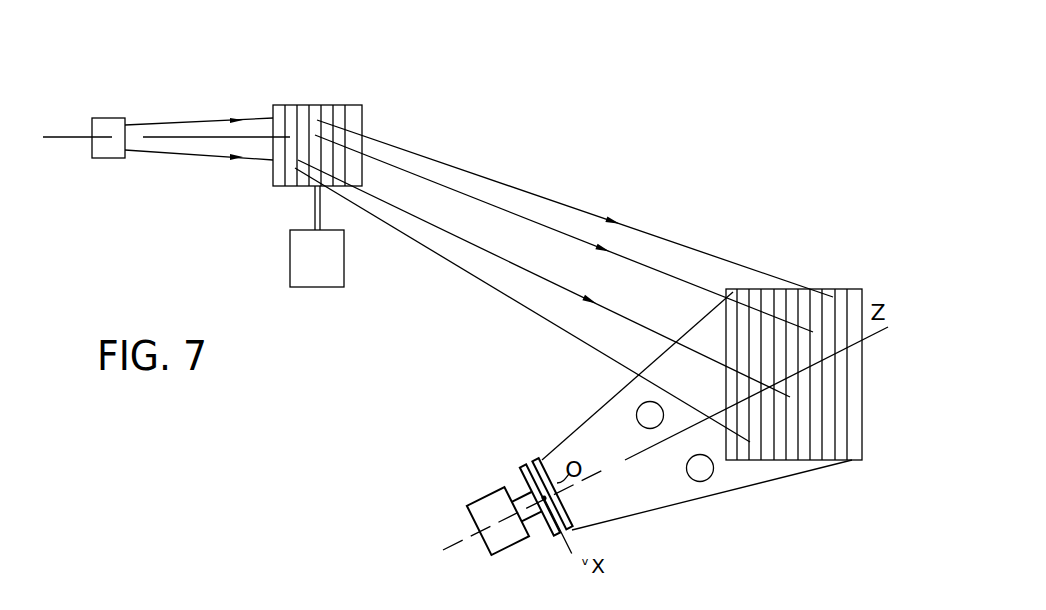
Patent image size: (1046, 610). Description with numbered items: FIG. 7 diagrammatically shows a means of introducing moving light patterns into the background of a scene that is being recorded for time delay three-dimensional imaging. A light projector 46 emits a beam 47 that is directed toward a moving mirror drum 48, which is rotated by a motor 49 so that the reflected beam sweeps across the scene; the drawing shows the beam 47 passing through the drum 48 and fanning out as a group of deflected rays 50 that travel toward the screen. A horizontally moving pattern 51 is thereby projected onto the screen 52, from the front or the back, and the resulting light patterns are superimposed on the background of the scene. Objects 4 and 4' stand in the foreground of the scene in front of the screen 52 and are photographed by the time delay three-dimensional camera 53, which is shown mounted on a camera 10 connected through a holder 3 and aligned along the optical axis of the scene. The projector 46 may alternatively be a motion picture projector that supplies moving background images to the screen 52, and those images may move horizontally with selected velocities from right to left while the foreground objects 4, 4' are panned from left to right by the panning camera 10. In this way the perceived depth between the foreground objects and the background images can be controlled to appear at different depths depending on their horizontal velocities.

The holder / connecting member 3 is at (518, 490).
The object 4 is at (636, 452).
The object 4' is at (695, 492).
The camera 10 is at (468, 507).
The light projector 46 is at (87, 162).
The beam 47 is at (208, 128).
The moving mirror drum 48 is at (360, 104).
The motor 49 is at (303, 271).
The deflected beams 50 is at (555, 226).
The horizontally moving pattern 51 is at (820, 298).
The screen 52 is at (876, 450).
The time delay 3D camera 53 is at (528, 460).